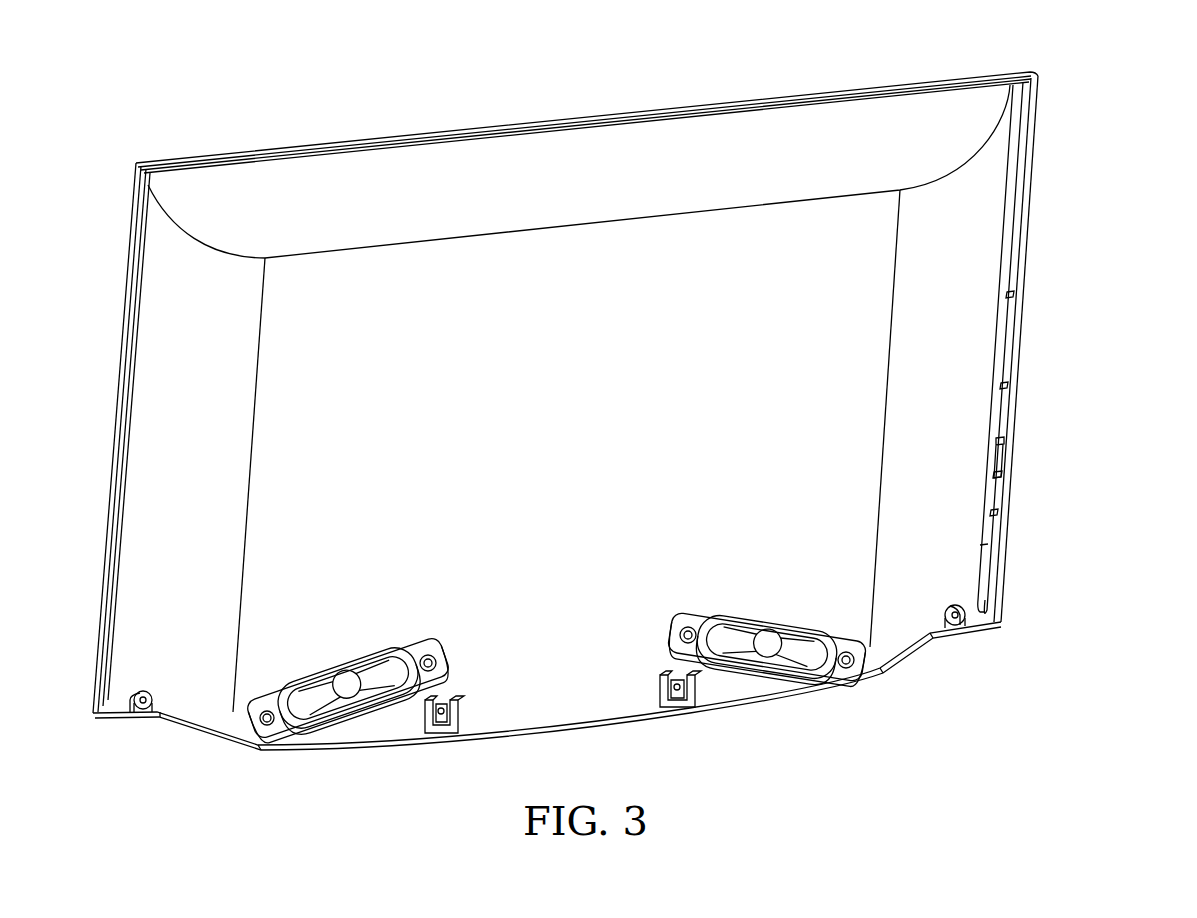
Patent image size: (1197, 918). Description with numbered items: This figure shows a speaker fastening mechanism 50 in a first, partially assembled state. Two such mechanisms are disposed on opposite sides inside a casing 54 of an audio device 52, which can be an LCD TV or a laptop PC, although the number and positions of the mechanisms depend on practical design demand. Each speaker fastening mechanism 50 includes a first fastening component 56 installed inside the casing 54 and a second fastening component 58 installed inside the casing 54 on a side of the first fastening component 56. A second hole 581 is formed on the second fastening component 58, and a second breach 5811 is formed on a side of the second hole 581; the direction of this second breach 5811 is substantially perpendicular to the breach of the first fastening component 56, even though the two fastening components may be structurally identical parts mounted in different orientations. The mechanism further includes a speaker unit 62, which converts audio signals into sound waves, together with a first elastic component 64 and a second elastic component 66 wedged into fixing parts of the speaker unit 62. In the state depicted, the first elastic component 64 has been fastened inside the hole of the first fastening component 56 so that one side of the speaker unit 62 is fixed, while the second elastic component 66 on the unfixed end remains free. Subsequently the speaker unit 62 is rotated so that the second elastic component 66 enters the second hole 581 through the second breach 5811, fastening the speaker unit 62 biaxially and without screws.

The speaker fastening mechanism 50 is at (319, 768).
The audio device 52 is at (1064, 90).
The casing 54 is at (1026, 336).
The first fastening component 56 is at (258, 746).
The second fastening component 58 is at (447, 735).
The second hole 581 is at (458, 716).
The second breach 5811 is at (440, 694).
The speaker unit 62 is at (369, 718).
The first elastic component 64 is at (262, 741).
The second elastic component 66 is at (436, 662).